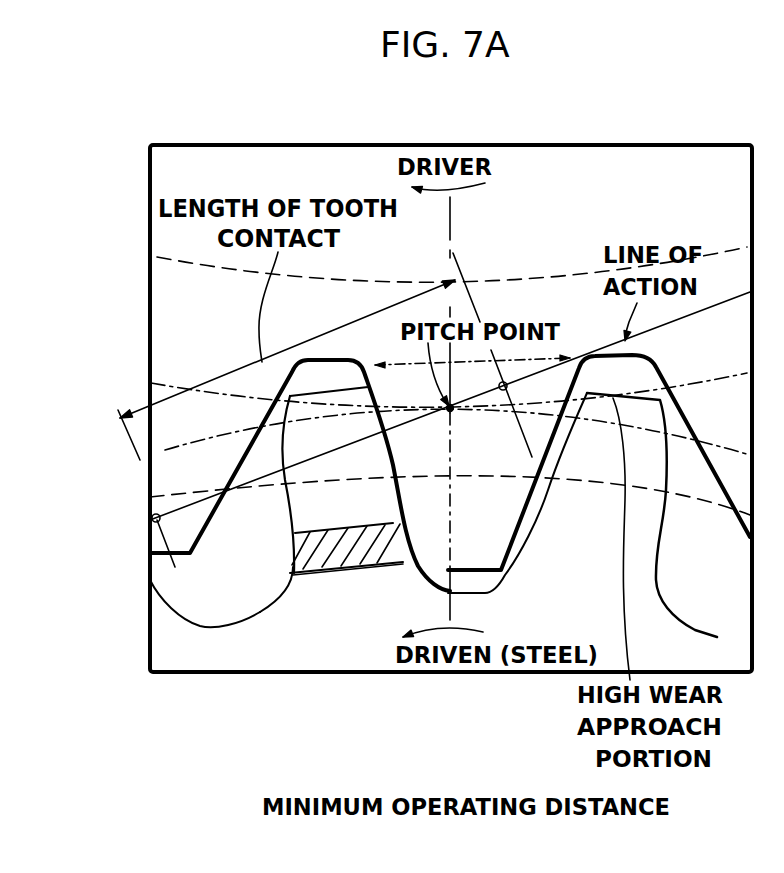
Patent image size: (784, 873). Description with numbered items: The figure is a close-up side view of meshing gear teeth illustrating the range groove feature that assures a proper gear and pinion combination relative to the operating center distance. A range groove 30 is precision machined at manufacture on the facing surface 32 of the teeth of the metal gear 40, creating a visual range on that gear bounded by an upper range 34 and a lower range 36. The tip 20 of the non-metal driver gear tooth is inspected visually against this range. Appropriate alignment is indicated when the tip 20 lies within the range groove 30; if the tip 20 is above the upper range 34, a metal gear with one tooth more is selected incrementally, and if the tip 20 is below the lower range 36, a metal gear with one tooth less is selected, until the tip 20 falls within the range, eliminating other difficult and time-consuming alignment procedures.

The tip 20 is at (488, 570).
The range groove 30 is at (320, 550).
The facing surface 32 is at (403, 607).
The upper range 34 is at (303, 533).
The lower range 36 is at (293, 578).
The metal gear 40 is at (183, 645).